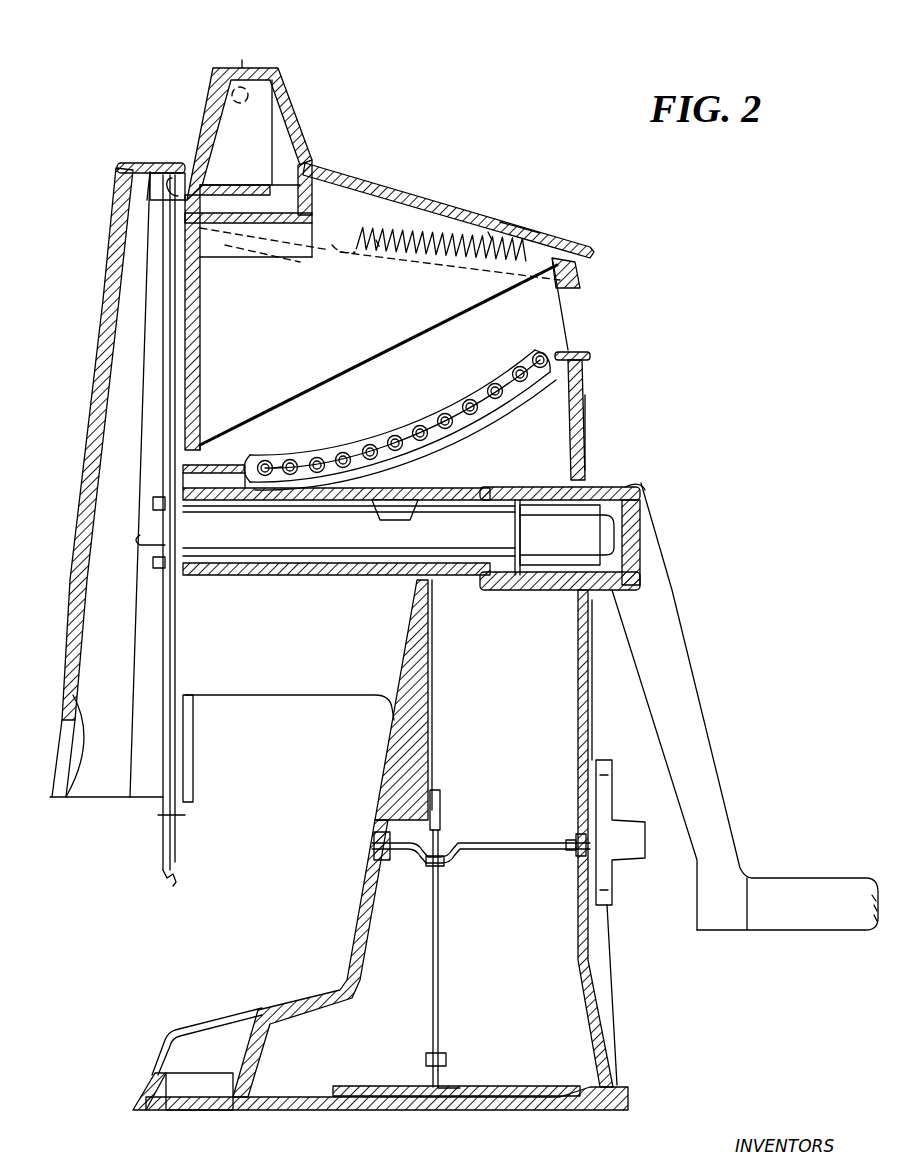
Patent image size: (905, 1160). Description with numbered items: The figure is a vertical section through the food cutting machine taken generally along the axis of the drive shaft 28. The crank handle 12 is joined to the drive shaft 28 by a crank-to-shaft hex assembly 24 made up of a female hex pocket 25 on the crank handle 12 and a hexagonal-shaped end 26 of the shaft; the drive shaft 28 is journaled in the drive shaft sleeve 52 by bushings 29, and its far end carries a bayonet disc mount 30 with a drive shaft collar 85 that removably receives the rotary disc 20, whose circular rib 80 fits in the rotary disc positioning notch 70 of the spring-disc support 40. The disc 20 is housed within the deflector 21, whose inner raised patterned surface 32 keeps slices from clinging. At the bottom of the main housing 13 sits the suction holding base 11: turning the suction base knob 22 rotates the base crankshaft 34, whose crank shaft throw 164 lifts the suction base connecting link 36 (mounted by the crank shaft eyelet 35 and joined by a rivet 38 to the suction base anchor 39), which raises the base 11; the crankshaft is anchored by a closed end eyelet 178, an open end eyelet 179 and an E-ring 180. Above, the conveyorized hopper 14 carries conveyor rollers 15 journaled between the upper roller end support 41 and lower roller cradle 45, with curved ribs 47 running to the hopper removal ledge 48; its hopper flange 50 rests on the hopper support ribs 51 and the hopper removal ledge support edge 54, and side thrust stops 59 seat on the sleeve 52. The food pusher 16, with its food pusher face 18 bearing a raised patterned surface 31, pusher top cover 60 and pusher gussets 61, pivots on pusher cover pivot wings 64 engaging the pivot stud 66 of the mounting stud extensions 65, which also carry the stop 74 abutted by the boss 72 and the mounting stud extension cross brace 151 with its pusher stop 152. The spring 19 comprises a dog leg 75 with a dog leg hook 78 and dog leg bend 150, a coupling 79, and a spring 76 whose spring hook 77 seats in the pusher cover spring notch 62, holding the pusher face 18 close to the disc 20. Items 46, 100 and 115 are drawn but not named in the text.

The suction holding base 11 is at (570, 1112).
The crank handle 12 is at (724, 752).
The main housing 13 is at (425, 838).
The conveyorized hopper 14 is at (378, 355).
The conveyor rollers 15 is at (403, 398).
The food pusher 16 is at (445, 195).
The food pusher face 18 is at (201, 352).
The spring 19 is at (423, 235).
The rotary disc 20 is at (175, 840).
The deflector 21 is at (106, 482).
The suction base knob 22 is at (620, 832).
The crank-to-shaft hex assembly 24 is at (590, 488).
The female hex pocket 25 is at (642, 490).
The hexagonal-shaped end 26 is at (555, 560).
The drive shaft 28 is at (349, 540).
The bushings 29 is at (490, 488).
The bayonet disc mount 30 is at (155, 560).
The raised patterned surface 31 is at (200, 300).
The raised patterned surface 32 is at (115, 193).
The base crankshaft 34 is at (542, 840).
The crank shaft eyelet 35 is at (441, 828).
The suction base connecting link 36 is at (447, 952).
The rivet 38 is at (450, 1060).
The suction base anchor 39 is at (395, 1086).
The spring-disc support 40 is at (245, 250).
The upper roller end support 41 is at (320, 462).
The lower roller cradle 45 is at (397, 445).
The housing side wall 46 is at (583, 390).
The curved ribs 47 is at (510, 400).
The hopper removal ledge 48 is at (565, 350).
The hopper flange 50 is at (183, 470).
The hopper support ribs 51 is at (392, 500).
The drive shaft sleeve 52 is at (432, 490).
The hopper removal ledge support edge 54 is at (598, 396).
The side thrust stops 59 is at (215, 470).
The pusher top cover 60 is at (515, 224).
The pusher gussets 61 is at (275, 374).
The pusher cover spring notch 62 is at (572, 256).
The pusher cover pivot wings 64 is at (300, 112).
The mounting stud extensions 65 is at (250, 68).
The pivot stud 66 is at (224, 72).
The rotary disc positioning notch 70 is at (157, 248).
The boss 72 is at (186, 160).
The stop 74 is at (256, 185).
The dog leg 75 is at (332, 245).
The spring 76 is at (488, 232).
The spring hook 77 is at (555, 250).
The dog leg hook 78 is at (178, 185).
The coupling 79 is at (376, 240).
The circular rib 80 is at (128, 170).
The drive shaft collar 85 is at (180, 560).
The pusher plate 100 is at (148, 330).
The foot pad 115 is at (205, 1087).
The dog leg bend 150 is at (350, 258).
The mounting stud extension cross brace 151 is at (242, 68).
The pusher stop 152 is at (215, 80).
The crank shaft throw 164 is at (444, 864).
The closed end eyelet 178 is at (374, 845).
The open end eyelet 179 is at (570, 855).
The E-ring 180 is at (586, 840).